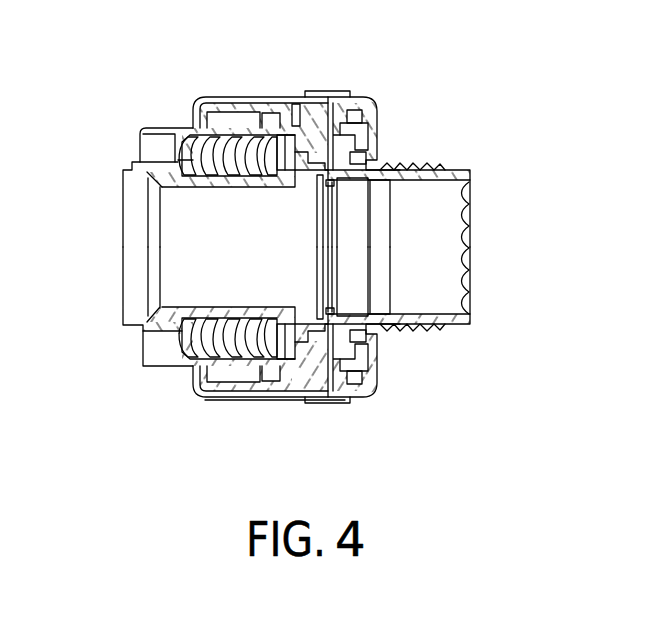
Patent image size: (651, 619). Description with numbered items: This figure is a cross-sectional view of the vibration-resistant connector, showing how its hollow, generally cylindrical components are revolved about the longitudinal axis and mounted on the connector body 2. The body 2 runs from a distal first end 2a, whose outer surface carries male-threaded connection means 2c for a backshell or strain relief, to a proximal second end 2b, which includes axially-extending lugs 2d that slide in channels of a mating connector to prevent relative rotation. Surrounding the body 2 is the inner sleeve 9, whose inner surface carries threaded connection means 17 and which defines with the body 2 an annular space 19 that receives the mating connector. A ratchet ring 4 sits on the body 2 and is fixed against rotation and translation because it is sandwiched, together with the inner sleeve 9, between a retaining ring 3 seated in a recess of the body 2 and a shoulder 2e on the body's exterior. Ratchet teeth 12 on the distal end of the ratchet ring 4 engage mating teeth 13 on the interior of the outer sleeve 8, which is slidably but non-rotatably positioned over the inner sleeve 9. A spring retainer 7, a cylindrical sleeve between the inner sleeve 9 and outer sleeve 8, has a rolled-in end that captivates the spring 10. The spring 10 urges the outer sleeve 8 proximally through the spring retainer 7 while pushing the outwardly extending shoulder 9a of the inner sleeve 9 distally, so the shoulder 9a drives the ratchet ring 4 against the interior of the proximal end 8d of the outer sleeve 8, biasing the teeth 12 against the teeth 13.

The connector body 2 is at (453, 168).
The first end 2a is at (468, 243).
The second end 2b is at (125, 323).
The connection means 2c is at (417, 163).
The lugs 2d is at (173, 161).
The shoulder 2e is at (302, 168).
The retaining ring 3 is at (373, 333).
The ratchet ring 4 is at (340, 357).
The spring retainer 7 is at (202, 116).
The outer sleeve 8 is at (360, 388).
The proximal end of the outer sleeve 8d is at (367, 110).
The inner sleeve 9 is at (162, 132).
The shoulder 9a is at (298, 118).
The spring 10 is at (245, 373).
The ratchet teeth 12 is at (335, 118).
The teeth 13 is at (368, 134).
The connection means 17 is at (218, 147).
The annular space 19 is at (145, 147).